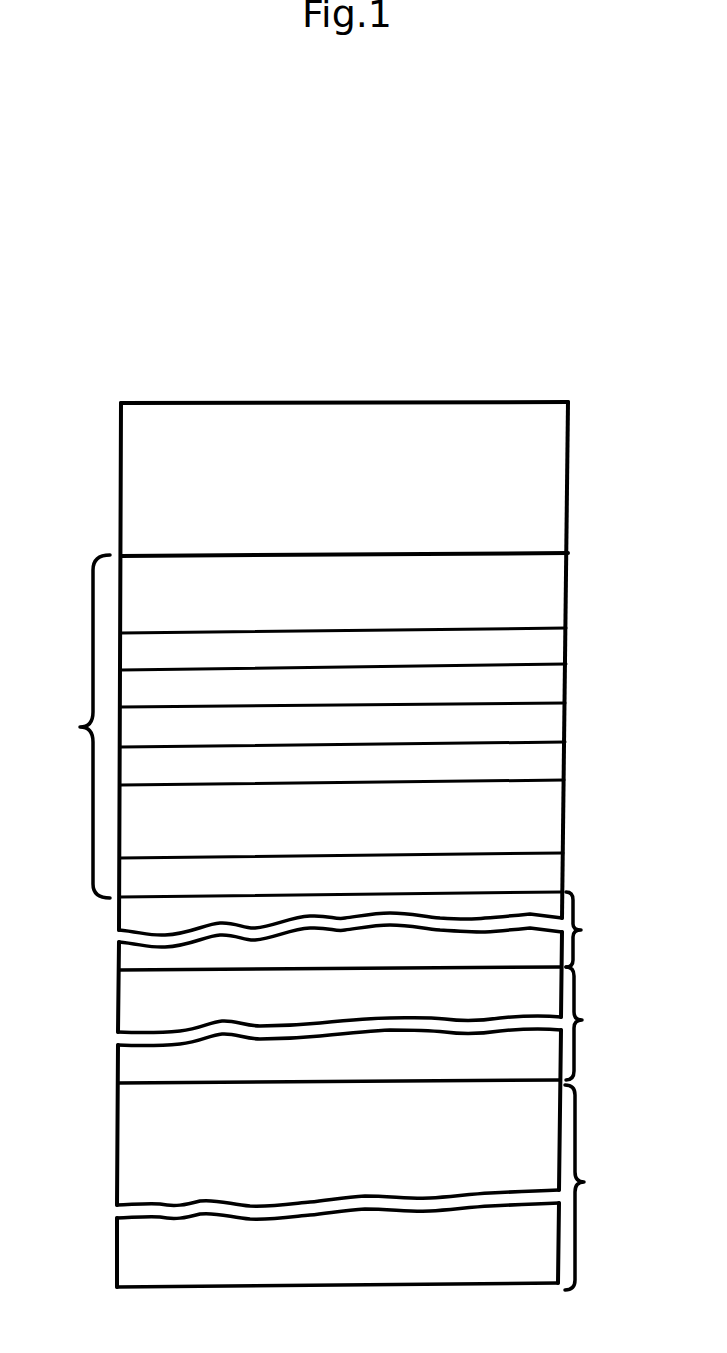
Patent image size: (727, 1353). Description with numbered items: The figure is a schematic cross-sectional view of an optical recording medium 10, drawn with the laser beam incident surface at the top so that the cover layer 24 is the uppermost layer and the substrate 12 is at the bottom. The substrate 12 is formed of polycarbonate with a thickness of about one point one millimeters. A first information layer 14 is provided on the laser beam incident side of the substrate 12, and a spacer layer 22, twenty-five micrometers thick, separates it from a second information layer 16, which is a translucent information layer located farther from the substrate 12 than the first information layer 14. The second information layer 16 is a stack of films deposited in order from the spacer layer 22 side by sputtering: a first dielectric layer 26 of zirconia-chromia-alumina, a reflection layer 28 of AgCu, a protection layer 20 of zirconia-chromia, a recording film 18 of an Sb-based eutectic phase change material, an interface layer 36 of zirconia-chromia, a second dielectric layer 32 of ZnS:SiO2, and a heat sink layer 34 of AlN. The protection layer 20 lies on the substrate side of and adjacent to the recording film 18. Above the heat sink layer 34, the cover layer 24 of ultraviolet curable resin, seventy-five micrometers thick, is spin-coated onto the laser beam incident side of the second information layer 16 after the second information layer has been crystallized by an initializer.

The optical recording medium 10 is at (352, 348).
The substrate 12 is at (373, 1187).
The first information layer 14 is at (370, 1025).
The second information layer 16 is at (332, 726).
The recording film 18 is at (556, 727).
The protection layer 20 is at (556, 759).
The spacer layer 22 is at (370, 931).
The cover layer 24 is at (556, 469).
The first dielectric layer 26 is at (556, 870).
The reflection layer 28 is at (556, 817).
The second dielectric layer 32 is at (556, 645).
The heat sink layer 34 is at (556, 594).
The interface layer 36 is at (556, 684).